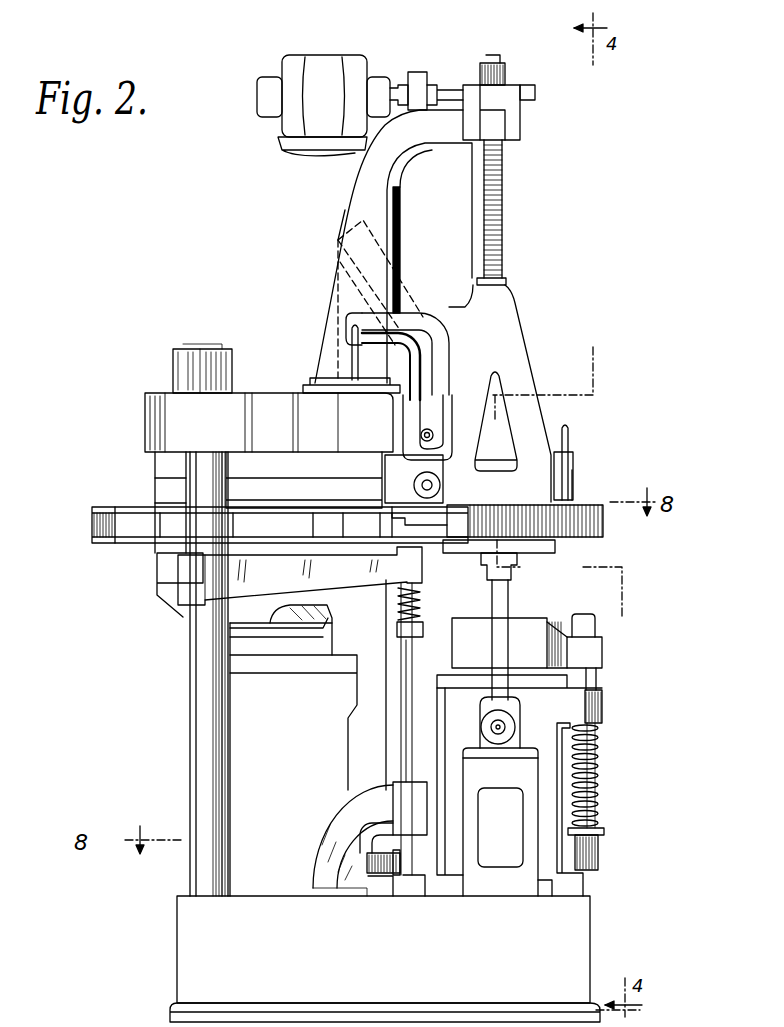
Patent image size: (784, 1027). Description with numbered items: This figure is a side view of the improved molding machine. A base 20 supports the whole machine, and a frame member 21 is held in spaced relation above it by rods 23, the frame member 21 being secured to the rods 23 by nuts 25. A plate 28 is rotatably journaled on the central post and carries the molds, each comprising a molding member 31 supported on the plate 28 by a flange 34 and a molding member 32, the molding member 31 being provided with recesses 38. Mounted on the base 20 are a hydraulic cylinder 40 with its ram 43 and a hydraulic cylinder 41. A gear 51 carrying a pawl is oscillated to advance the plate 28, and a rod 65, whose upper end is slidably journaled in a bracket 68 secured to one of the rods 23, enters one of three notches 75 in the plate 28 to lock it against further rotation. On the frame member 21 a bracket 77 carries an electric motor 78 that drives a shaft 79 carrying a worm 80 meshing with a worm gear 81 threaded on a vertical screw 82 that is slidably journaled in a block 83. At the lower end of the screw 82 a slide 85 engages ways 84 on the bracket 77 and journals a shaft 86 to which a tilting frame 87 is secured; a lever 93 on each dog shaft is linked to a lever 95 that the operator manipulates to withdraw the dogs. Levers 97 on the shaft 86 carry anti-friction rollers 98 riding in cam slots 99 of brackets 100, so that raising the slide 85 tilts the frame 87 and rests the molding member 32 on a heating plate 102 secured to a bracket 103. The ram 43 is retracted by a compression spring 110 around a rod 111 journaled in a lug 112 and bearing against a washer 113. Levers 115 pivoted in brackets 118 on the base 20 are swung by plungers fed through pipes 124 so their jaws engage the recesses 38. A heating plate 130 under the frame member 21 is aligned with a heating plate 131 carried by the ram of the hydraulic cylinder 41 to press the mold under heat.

The base 20 is at (575, 937).
The frame member 21 is at (145, 415).
The rods 23 is at (205, 706).
The nuts 25 is at (180, 360).
The plate 28 is at (605, 530).
The molding member 31 is at (115, 516).
The molding member 32 is at (160, 490).
The flange 34 is at (160, 505).
The recesses 38 is at (520, 556).
The hydraulic cylinder 40 is at (548, 793).
The hydraulic cylinder 41 is at (308, 738).
The ram 43 is at (525, 636).
The gear 51 is at (358, 873).
The rod 65 is at (403, 690).
The bracket 68 is at (192, 585).
The notches 75 is at (400, 520).
The bracket 77 is at (360, 200).
The electric motor 78 is at (327, 63).
The shaft 79 is at (445, 88).
The worm 80 is at (503, 82).
The worm gear 81 is at (536, 94).
The screw 82 is at (503, 225).
The block 83 is at (497, 127).
The ways 84 is at (400, 220).
The slide 85 is at (514, 346).
The shaft 86 is at (443, 480).
The tilting frame 87 is at (575, 458).
The lever 93 is at (574, 476).
The lever 95 is at (569, 430).
The levers 97 is at (420, 468).
The anti-friction rollers 98 is at (433, 430).
The cam slots 99 is at (430, 360).
The brackets 100 is at (425, 328).
The heating plate 102 is at (343, 252).
The bracket 103 is at (366, 278).
The compression spring 110 is at (598, 735).
The rod 111 is at (599, 750).
The lug 112 is at (600, 702).
The washer 113 is at (605, 832).
The levers 115 is at (490, 592).
The brackets 118 is at (500, 796).
The pipes 124 is at (492, 727).
The heating plate 130 is at (157, 468).
The heating plate 131 is at (158, 573).